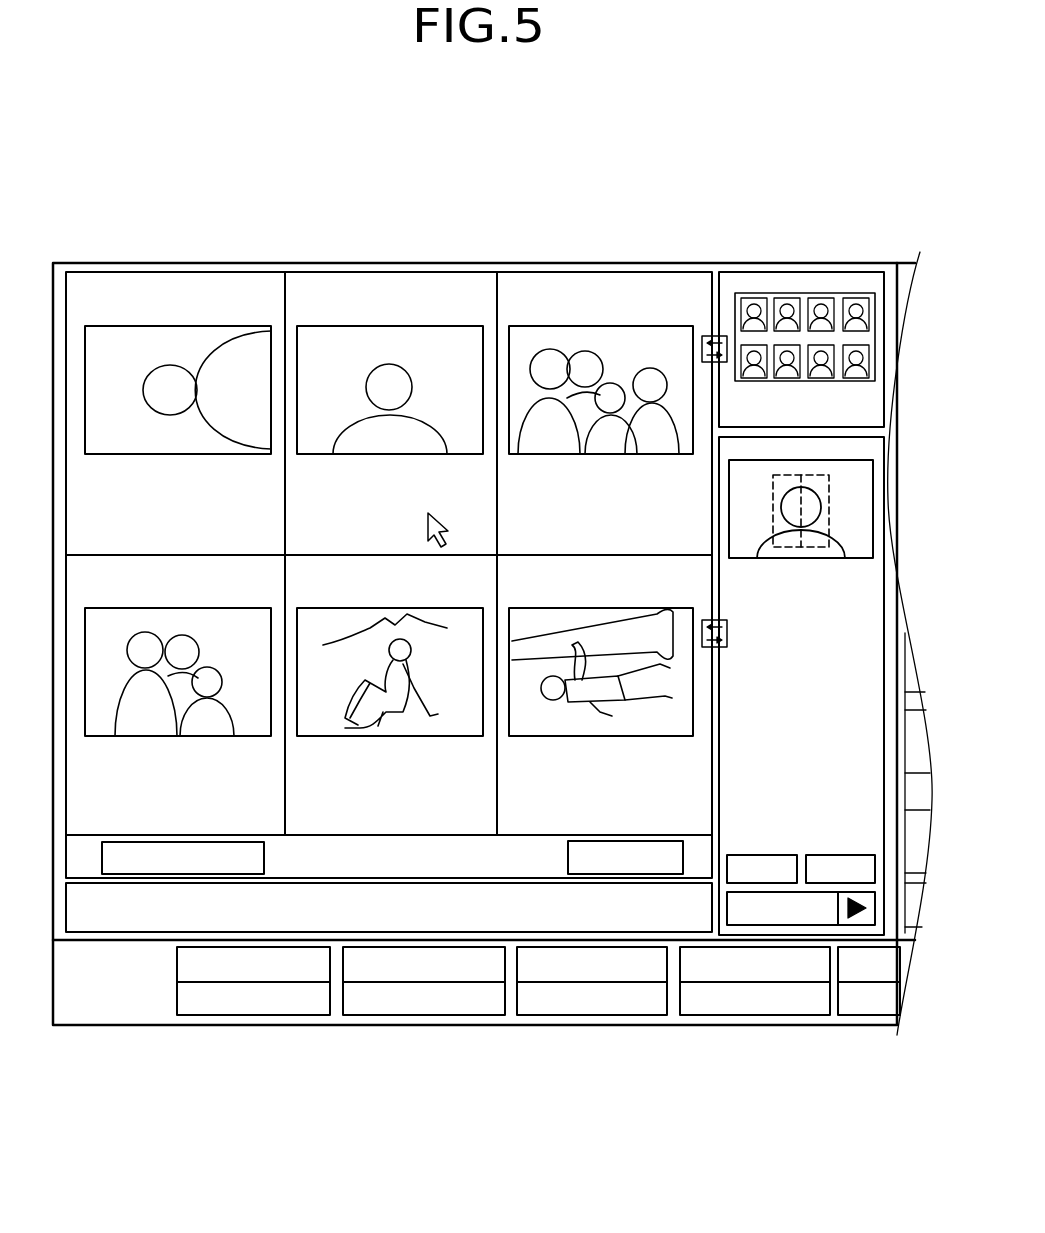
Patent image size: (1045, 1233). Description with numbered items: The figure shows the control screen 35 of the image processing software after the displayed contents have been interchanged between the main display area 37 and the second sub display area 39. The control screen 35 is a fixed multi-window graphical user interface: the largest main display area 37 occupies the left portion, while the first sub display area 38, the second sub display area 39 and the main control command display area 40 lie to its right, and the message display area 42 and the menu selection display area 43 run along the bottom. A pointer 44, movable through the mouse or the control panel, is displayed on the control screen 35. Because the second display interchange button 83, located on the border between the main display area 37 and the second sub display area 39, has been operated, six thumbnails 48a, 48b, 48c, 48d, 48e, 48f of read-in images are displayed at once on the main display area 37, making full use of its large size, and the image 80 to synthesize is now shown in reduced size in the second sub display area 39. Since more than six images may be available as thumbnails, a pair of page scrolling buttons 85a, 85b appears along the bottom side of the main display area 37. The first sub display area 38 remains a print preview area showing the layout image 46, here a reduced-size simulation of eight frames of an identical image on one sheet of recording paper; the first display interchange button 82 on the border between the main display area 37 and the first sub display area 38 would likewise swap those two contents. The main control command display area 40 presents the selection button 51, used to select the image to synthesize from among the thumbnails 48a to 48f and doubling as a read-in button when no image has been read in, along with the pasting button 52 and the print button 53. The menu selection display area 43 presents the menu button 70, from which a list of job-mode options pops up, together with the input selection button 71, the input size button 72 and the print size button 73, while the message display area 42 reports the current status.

The control screen 35 is at (392, 248).
The main display area 37 is at (146, 270).
The first sub display area 38 is at (835, 270).
The second sub display area 39 is at (704, 583).
The main control command display area 40 is at (866, 930).
The message display area 42 is at (82, 928).
The menu selection display area 43 is at (160, 1017).
The pointer 44 is at (426, 524).
The layout image 46 is at (772, 292).
The thumbnail 48a is at (166, 452).
The thumbnail 48b is at (340, 327).
The thumbnail 48c is at (598, 450).
The thumbnail 48d is at (150, 610).
The thumbnail 48e is at (383, 728).
The thumbnail 48f is at (582, 730).
The selection button 51 is at (768, 855).
The pasting button 52 is at (840, 855).
The print button 53 is at (727, 910).
The menu button 70 is at (307, 1014).
The input selection button 71 is at (462, 1014).
The input size button 72 is at (537, 1014).
The print size button 73 is at (716, 1014).
The image to synthesize 80 is at (780, 558).
The first display interchange button 82 is at (702, 348).
The second display interchange button 83 is at (727, 635).
The page scrolling button 85a is at (264, 858).
The page scrolling button 85b is at (568, 856).